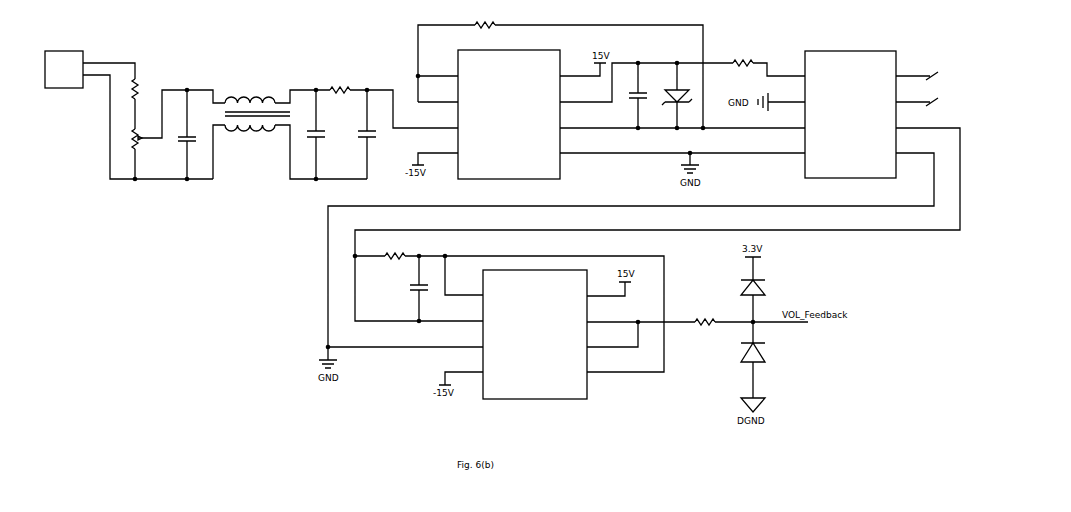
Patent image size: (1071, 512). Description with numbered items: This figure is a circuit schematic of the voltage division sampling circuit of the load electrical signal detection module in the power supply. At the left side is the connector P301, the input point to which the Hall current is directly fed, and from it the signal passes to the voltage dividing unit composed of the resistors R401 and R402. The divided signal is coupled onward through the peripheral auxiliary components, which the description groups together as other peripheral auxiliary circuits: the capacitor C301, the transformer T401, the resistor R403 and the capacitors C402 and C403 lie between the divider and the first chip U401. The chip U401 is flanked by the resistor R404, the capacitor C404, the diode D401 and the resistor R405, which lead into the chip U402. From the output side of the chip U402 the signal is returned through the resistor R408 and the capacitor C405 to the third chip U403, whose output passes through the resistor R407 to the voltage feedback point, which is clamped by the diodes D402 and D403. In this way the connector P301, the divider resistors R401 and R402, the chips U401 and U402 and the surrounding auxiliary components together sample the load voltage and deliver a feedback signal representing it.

The connector P301 is at (64, 63).
The resistor R401 is at (147, 88).
The resistor R402 is at (147, 143).
The capacitor C301 is at (181, 131).
The transformer T401 is at (252, 108).
The resistor R403 is at (338, 84).
The capacitor C402 is at (328, 137).
The capacitor C403 is at (379, 137).
The chip U401 is at (511, 114).
The resistor R404 is at (482, 18).
The capacitor C404 is at (629, 103).
The zener diode D401 is at (672, 102).
The resistor R405 is at (740, 57).
The chip U402 is at (852, 114).
The resistor R408 is at (386, 250).
The capacitor C405 is at (411, 295).
The operational amplifier LF353 U403 is at (537, 333).
The resistor R407 is at (702, 316).
The diode D402 is at (767, 287).
The diode D403 is at (767, 352).